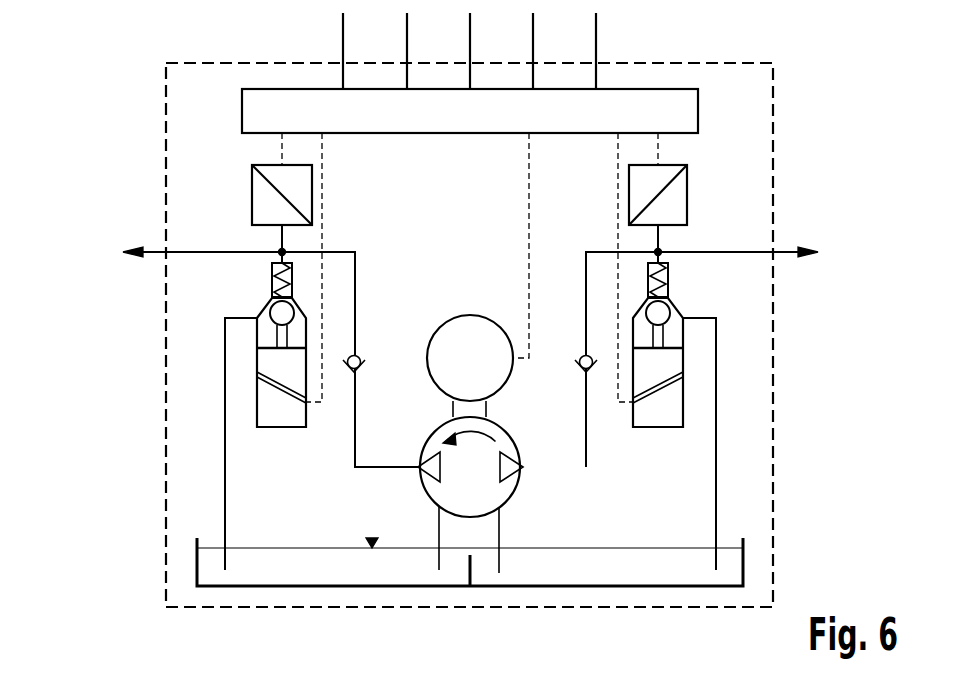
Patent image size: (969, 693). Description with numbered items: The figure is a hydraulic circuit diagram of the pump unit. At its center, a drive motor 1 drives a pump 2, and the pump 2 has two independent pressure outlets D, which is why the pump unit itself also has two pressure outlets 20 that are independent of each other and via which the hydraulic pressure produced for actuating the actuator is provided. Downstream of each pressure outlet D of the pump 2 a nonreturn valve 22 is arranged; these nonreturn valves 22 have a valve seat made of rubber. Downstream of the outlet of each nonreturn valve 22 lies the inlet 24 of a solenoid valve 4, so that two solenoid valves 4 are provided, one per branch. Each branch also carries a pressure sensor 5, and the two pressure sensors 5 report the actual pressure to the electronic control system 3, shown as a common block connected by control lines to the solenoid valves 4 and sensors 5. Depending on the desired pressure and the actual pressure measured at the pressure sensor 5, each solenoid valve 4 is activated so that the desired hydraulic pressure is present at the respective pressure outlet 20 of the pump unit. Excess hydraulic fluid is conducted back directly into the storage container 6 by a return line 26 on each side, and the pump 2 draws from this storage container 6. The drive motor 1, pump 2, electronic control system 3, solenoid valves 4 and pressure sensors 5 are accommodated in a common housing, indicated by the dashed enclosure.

The drive motor 1 is at (470, 315).
The pump 2 is at (486, 517).
The electronic control system 3 is at (650, 89).
The solenoid valve 4 is at (257, 355).
The pressure sensor 5 is at (252, 190).
The storage container 6 is at (743, 565).
The pressure outlet 20 is at (148, 252).
The nonreturn valve 22 is at (357, 356).
The inlet 24 is at (282, 254).
The return line 26 is at (225, 455).
The pressure outlet D is at (418, 470).